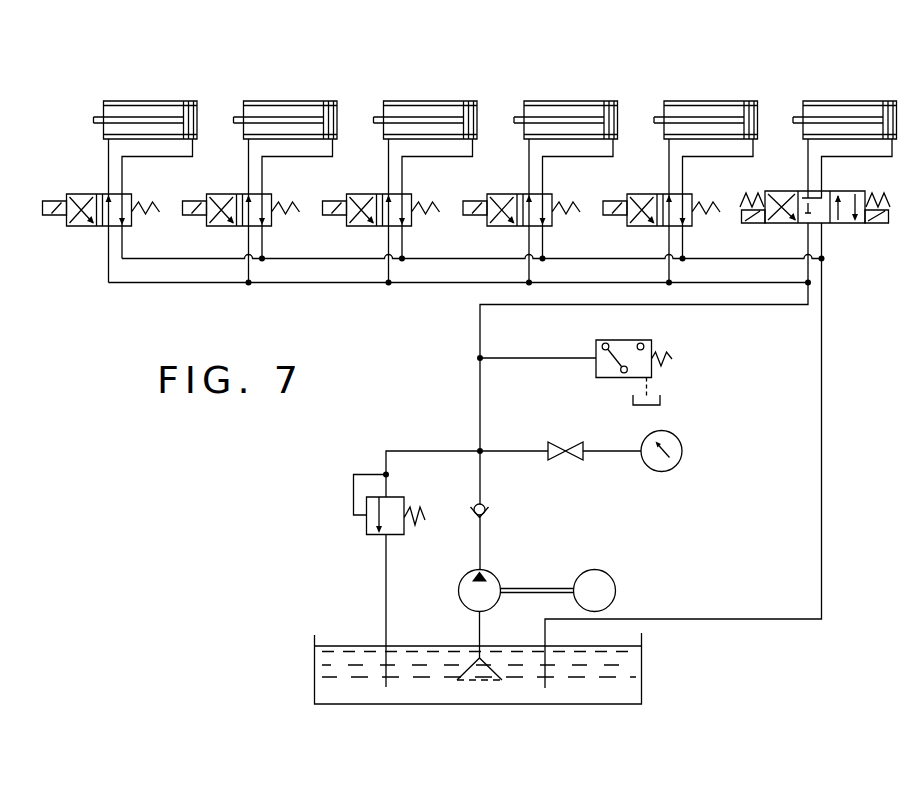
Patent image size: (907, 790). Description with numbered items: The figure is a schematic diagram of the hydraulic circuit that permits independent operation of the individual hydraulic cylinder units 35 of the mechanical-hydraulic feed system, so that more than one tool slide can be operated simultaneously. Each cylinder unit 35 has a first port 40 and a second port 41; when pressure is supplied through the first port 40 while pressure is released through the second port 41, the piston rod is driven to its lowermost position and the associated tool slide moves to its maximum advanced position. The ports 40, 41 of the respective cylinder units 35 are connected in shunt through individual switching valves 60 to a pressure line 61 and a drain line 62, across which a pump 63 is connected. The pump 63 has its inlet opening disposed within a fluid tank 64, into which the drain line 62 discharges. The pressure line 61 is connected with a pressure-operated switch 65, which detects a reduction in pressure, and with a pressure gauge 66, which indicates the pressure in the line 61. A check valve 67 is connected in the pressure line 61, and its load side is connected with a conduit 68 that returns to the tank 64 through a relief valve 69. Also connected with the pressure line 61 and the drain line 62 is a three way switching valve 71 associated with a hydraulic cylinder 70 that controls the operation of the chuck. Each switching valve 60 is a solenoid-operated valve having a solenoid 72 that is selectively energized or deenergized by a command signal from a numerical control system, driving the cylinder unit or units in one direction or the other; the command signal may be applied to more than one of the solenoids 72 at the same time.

The hydraulic cylinder unit 35 is at (146, 106).
The first port 40 is at (193, 140).
The second port 41 is at (108, 140).
The switching valve 60 is at (98, 226).
The pressure line 61 is at (740, 305).
The drain line 62 is at (824, 313).
The pump 63 is at (515, 568).
The fluid tank 64 is at (313, 663).
The pressure-operated switch 65 is at (617, 339).
The pressure gauge 66 is at (698, 429).
The check valve 67 is at (472, 505).
The conduit 68 is at (422, 450).
The relief valve 69 is at (380, 535).
The hydraulic cylinder 70 is at (846, 106).
The three way switching valve 71 is at (788, 228).
The solenoid 72 is at (44, 215).